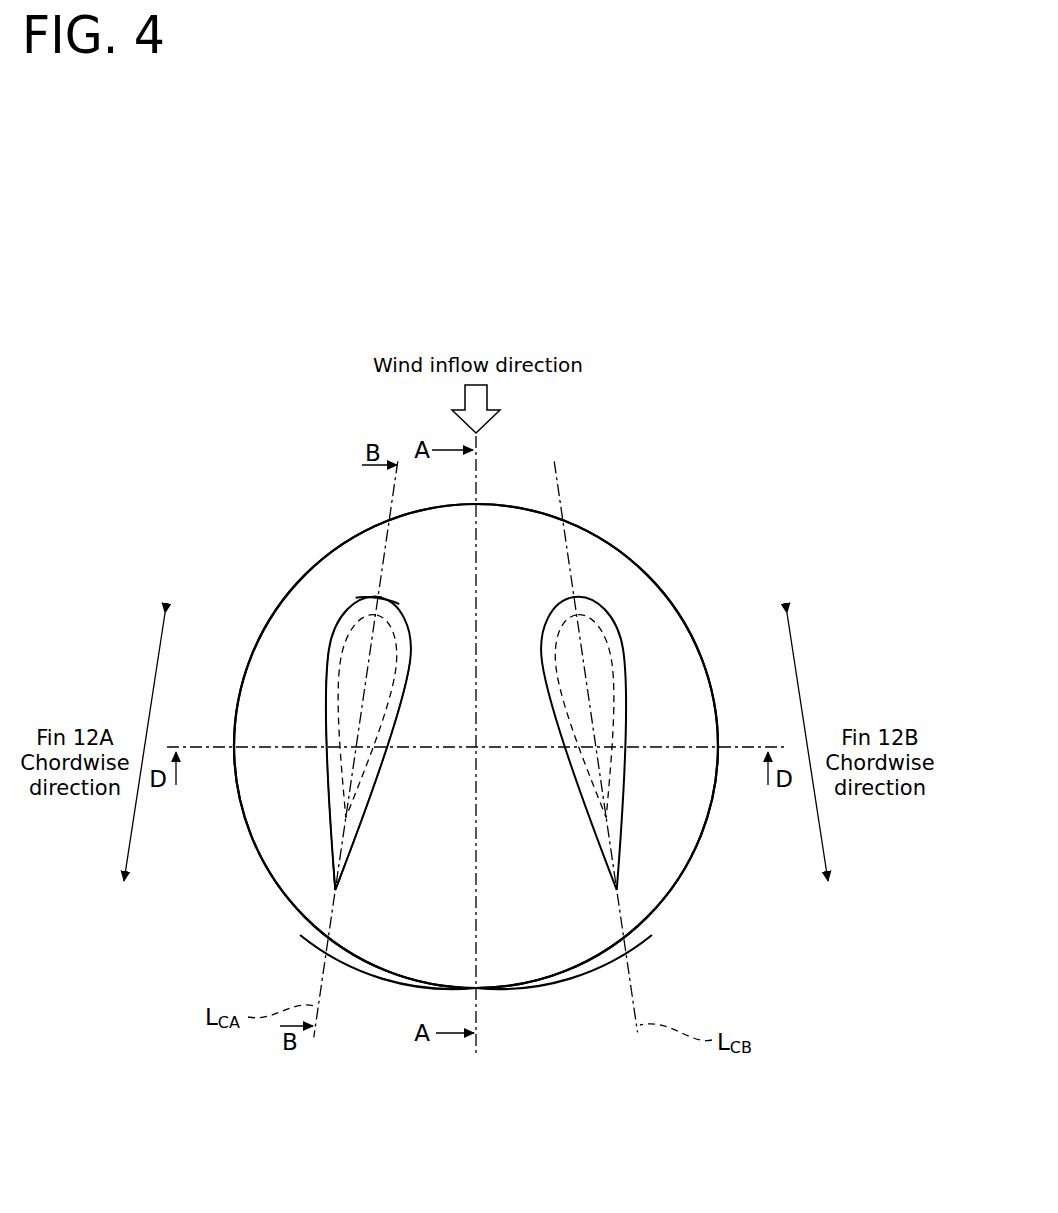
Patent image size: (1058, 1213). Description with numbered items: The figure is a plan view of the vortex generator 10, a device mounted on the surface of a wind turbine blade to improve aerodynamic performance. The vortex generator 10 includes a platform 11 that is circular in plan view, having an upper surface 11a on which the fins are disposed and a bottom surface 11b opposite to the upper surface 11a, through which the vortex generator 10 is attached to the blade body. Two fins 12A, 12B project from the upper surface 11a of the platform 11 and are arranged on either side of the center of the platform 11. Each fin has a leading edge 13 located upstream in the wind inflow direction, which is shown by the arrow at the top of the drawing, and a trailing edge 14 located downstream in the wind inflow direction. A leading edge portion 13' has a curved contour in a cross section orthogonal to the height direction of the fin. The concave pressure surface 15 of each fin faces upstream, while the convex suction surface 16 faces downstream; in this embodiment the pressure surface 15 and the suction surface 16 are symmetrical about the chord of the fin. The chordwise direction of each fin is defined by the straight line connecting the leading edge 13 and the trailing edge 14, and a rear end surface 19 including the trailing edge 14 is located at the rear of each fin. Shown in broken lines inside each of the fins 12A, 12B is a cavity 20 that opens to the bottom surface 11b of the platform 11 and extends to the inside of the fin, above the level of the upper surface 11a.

The vortex generator 10 is at (690, 498).
The platform 11 is at (522, 540).
The upper surface 11a is at (523, 965).
The bottom surface 11b is at (421, 952).
The fin 12A is at (345, 650).
The fin 12B is at (610, 643).
The leading edge 13 is at (354, 543).
The leading edge portion 13' is at (320, 551).
The trailing edge 14 is at (334, 892).
The pressure surface 15 is at (326, 760).
The suction surface 16 is at (390, 772).
The rear end surface 19 is at (333, 893).
The cavity 20 is at (345, 722).